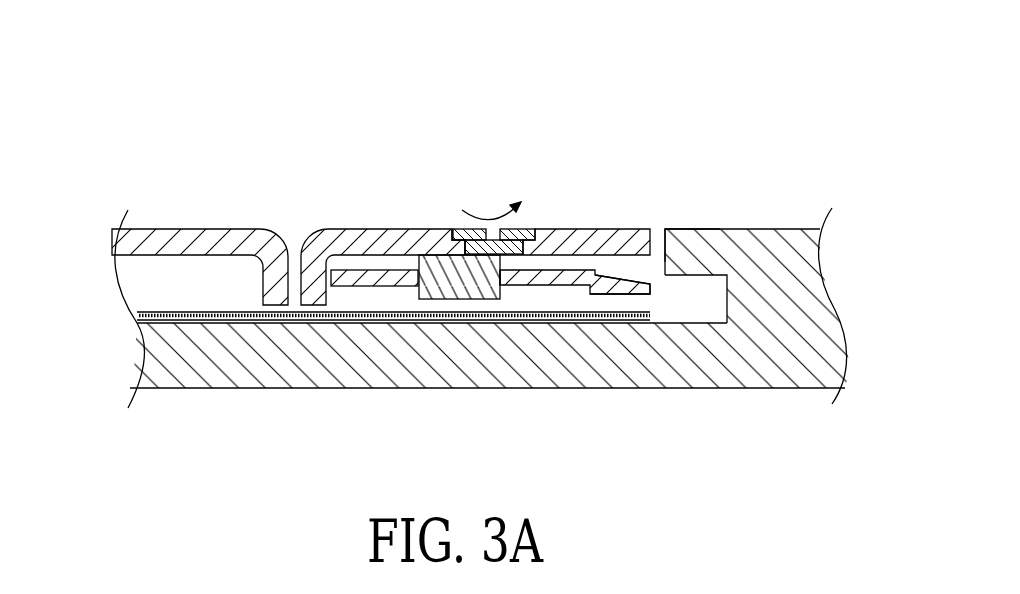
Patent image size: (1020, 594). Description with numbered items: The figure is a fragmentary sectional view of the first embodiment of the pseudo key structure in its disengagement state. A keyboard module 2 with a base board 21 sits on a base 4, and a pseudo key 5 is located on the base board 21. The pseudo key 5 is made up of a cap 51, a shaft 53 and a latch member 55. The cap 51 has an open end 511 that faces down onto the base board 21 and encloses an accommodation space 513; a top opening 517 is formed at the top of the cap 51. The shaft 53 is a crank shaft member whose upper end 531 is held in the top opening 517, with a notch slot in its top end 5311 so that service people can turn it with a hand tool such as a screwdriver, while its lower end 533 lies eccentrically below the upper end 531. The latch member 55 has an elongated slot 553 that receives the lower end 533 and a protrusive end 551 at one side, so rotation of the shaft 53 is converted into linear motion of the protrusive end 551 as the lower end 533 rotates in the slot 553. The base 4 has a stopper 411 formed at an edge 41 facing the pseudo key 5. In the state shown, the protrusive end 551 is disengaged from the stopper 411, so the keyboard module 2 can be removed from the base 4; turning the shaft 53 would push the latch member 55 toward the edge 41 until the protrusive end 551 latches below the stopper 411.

The keyboard module 2 is at (188, 212).
The base board 21 is at (140, 323).
The base 4 is at (205, 368).
The edge 41 is at (800, 295).
The stopper 411 is at (683, 240).
The pseudo key 5 is at (603, 95).
The cap 51 is at (319, 229).
The open end 511 is at (688, 298).
The accommodation space 513 is at (350, 290).
The top opening 517 is at (450, 229).
The shaft 53 is at (548, 175).
The upper end 531 is at (525, 246).
The top end 5311 is at (525, 229).
The lower end 533 is at (450, 283).
The latch member 55 is at (610, 368).
The protrusive end 551 is at (645, 293).
The elongated slot 553 is at (505, 284).